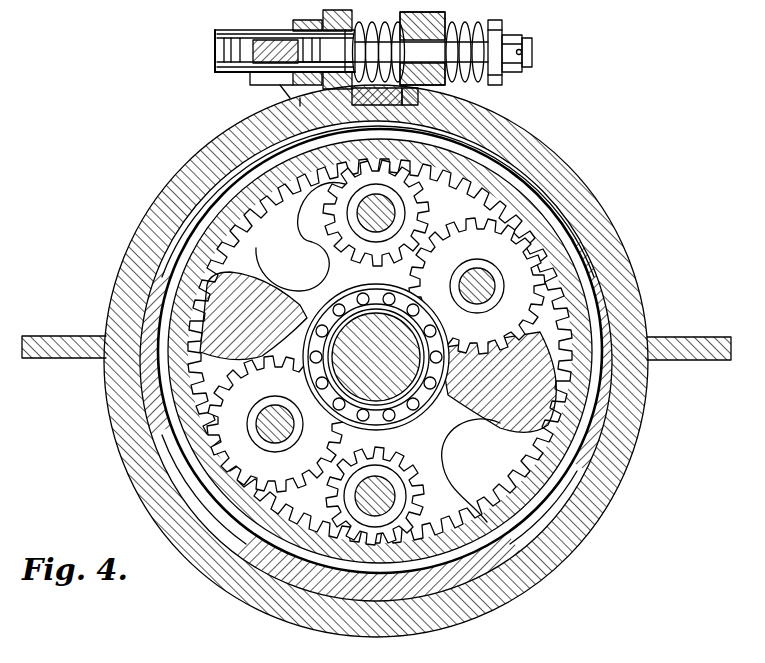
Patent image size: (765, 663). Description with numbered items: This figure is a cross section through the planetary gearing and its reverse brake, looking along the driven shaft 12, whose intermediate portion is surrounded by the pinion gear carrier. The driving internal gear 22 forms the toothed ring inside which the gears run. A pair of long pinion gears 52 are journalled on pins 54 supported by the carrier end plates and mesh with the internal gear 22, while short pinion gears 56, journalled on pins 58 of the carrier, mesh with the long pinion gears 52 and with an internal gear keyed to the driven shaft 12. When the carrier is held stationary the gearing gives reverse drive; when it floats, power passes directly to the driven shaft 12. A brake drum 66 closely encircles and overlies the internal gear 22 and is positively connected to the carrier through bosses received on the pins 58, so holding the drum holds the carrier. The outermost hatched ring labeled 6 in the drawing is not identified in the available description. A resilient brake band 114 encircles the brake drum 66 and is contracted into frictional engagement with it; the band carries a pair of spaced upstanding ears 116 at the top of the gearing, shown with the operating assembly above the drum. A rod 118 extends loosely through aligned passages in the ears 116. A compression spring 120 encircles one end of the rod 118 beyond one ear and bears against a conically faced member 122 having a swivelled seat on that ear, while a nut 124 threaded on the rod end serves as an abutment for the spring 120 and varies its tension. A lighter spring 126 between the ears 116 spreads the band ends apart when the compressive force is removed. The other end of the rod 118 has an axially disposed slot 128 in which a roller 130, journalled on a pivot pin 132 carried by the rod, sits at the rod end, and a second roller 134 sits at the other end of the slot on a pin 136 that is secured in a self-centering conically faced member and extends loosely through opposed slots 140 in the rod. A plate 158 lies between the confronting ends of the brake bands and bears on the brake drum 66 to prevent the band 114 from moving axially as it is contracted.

The housing ring 6 is at (142, 520).
The driven shaft 12 is at (412, 407).
The internal gear 22 is at (505, 212).
The long pinion gears 52 is at (495, 278).
The pins 54 is at (505, 272).
The short pinion gears 56 is at (322, 233).
The pins 58 is at (470, 192).
The brake drum 66 is at (605, 287).
The brake band 114 is at (148, 212).
The ears 116 is at (323, 13).
The rod 118 is at (225, 70).
The compression spring 120 is at (522, 62).
The conically faced member 122 is at (445, 92).
The nut 124 is at (532, 45).
The lighter spring 126 is at (452, 103).
The slot 128 is at (292, 78).
The roller 130 is at (215, 50).
The pivot pin 132 is at (262, 80).
The second roller 134 is at (285, 88).
The pin 136 is at (300, 98).
The opposed slots 140 is at (235, 30).
The plate 158 is at (225, 163).